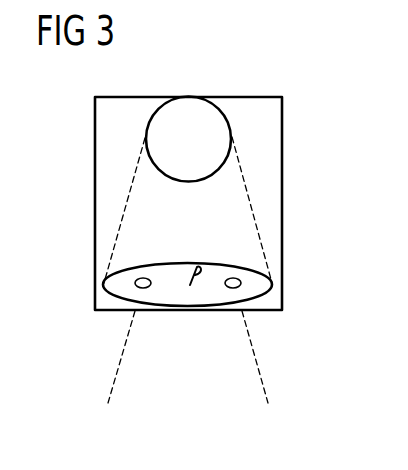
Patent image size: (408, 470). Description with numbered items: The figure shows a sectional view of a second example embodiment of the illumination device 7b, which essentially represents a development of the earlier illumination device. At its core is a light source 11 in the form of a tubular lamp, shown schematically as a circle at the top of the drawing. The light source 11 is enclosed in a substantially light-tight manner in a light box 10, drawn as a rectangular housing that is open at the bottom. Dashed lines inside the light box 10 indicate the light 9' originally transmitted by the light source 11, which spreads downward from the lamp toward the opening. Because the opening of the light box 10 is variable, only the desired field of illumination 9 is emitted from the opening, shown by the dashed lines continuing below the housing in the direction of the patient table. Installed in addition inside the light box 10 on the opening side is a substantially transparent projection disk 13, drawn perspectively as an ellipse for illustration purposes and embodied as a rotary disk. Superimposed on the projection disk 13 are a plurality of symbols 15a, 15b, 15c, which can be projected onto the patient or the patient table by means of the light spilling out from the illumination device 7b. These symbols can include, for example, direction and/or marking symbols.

The light box 10 is at (95, 203).
The light source 11 is at (218, 127).
The illumination device 7b is at (290, 185).
The light originally transmitted 9' is at (209, 210).
The field of illumination 9 is at (210, 357).
The projection disk 13 is at (257, 290).
The symbol 15a is at (235, 278).
The symbol 15b is at (144, 278).
The symbol 15c is at (198, 263).